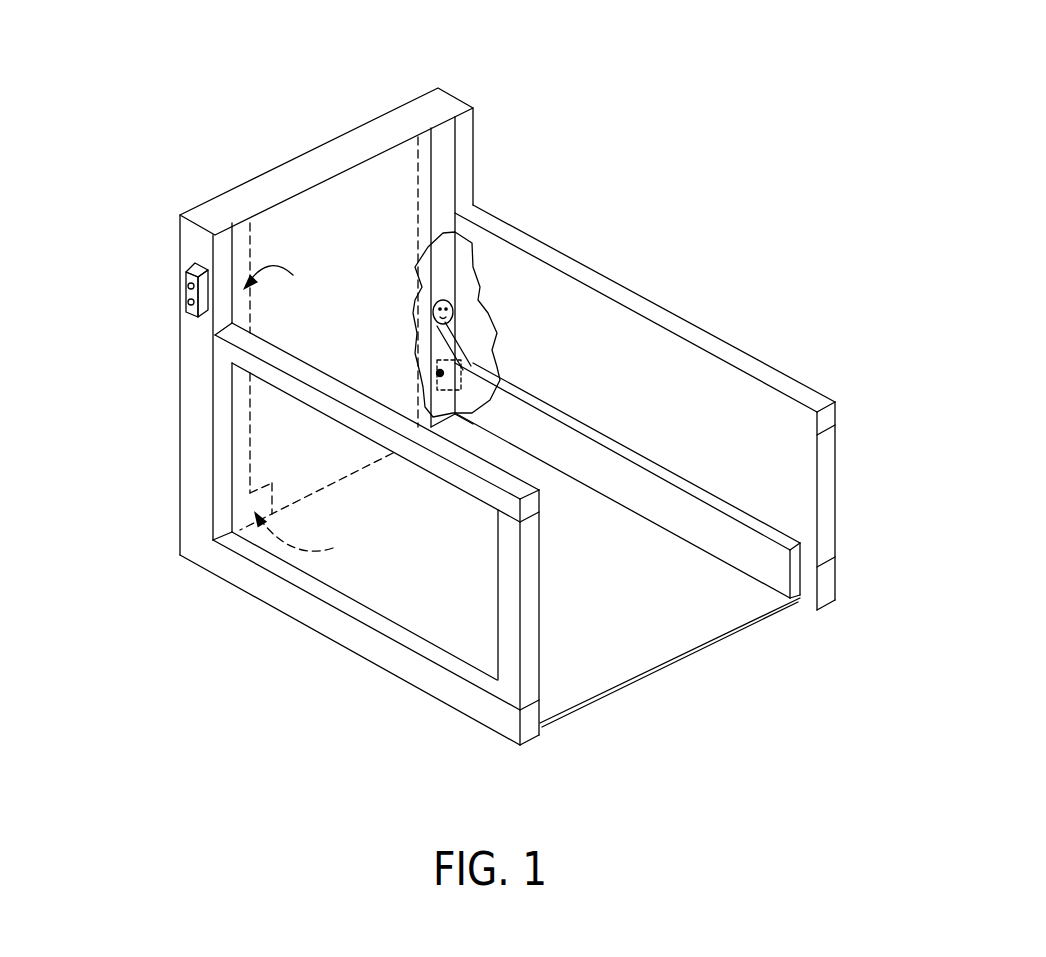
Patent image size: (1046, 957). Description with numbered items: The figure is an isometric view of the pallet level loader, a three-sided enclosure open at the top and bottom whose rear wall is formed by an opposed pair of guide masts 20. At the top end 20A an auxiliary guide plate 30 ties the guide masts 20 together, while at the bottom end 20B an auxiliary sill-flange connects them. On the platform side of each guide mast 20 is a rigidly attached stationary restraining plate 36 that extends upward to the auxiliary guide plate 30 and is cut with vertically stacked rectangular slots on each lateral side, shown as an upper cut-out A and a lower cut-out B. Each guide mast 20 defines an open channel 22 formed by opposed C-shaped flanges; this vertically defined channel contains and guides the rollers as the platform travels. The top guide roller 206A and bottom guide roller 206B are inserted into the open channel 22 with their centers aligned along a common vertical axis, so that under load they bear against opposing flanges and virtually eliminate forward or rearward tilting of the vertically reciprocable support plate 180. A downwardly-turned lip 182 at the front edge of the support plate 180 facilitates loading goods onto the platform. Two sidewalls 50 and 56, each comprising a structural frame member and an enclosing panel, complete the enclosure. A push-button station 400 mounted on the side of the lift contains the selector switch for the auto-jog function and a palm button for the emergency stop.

The top end of guide mast 20A is at (512, 84).
The bottom end of guide mast 20B is at (146, 538).
The guide mast 20 is at (203, 340).
The open channel 22 is at (443, 244).
The auxiliary guide plate 30 is at (365, 148).
The stationary restraining plate 36 is at (266, 248).
The sidewall 50 is at (400, 583).
The sidewall 56 is at (742, 362).
The support plate 180 is at (572, 562).
The downwardly-turned lip 182 is at (710, 652).
The top guide roller 206A is at (436, 305).
The bottom guide roller 206B is at (436, 374).
The push-button station 400 is at (185, 273).
The upper cut-out slot A is at (277, 282).
The lower cut-out slot B is at (303, 537).